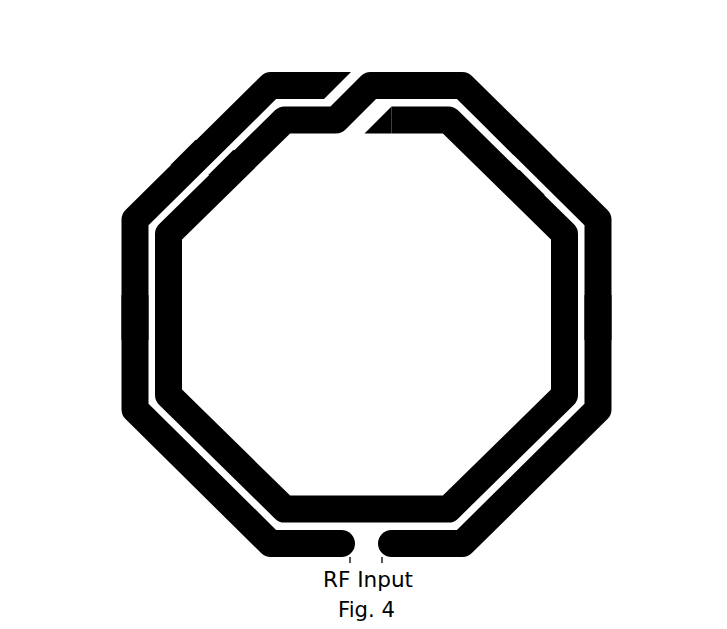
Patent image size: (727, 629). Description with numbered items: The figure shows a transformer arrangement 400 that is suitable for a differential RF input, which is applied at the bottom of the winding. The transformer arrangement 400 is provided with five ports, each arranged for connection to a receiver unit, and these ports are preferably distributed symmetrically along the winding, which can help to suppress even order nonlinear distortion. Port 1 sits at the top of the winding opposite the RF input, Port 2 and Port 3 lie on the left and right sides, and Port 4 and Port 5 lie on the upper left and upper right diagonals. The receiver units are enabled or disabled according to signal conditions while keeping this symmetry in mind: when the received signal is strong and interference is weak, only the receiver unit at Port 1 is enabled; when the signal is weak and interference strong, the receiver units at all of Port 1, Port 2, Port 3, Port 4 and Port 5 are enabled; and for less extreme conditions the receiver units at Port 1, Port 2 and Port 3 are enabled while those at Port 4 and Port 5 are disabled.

The transformer arrangement 400 is at (545, 482).
The Port 1 is at (380, 72).
The Port 2 is at (122, 332).
The Port 3 is at (577, 308).
The Port 4 is at (233, 155).
The Port 5 is at (525, 177).